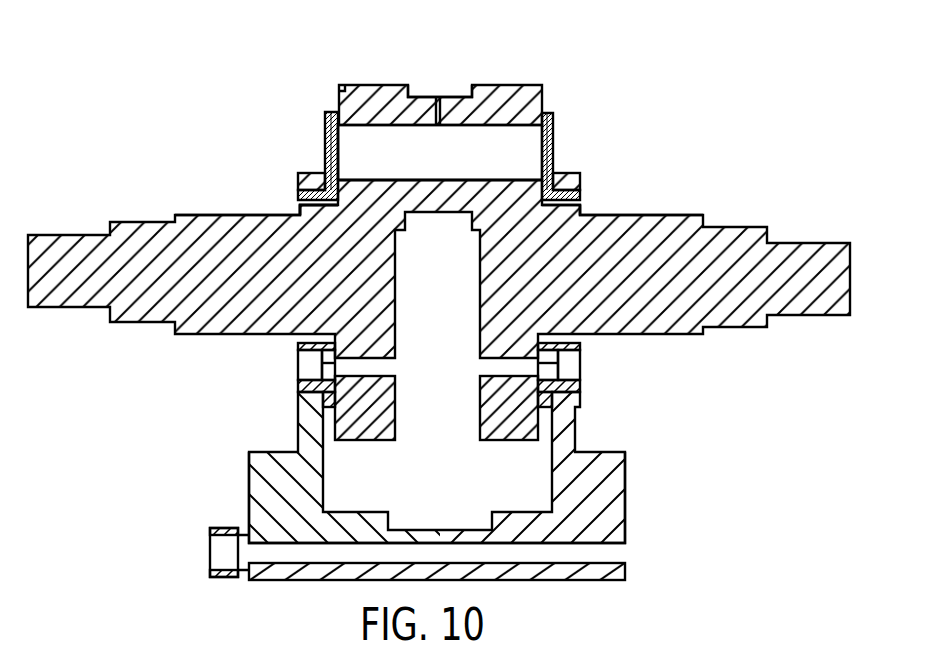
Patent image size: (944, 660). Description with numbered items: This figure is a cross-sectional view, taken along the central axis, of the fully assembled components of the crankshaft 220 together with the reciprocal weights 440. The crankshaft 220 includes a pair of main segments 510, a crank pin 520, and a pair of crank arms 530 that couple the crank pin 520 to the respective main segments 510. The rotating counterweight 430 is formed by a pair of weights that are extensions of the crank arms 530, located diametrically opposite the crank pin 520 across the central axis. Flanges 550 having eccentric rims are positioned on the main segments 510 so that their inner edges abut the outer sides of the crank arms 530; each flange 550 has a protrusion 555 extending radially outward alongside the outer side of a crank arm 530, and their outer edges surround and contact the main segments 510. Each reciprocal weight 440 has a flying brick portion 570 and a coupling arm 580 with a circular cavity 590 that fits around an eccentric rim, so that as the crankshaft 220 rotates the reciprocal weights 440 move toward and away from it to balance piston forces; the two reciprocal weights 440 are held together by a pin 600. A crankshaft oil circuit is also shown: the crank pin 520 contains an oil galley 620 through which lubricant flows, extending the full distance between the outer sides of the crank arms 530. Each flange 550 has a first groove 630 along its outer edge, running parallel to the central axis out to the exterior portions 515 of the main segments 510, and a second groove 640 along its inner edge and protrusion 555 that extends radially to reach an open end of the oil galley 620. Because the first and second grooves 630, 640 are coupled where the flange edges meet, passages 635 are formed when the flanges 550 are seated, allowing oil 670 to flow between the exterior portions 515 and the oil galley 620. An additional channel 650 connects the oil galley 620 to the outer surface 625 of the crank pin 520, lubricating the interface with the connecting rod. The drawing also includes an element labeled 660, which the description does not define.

The crankshaft 220 is at (736, 398).
The rotating counterweight 430 is at (505, 445).
The reciprocal weights 440 is at (635, 560).
The main segments 510 is at (142, 325).
The exterior portions 515 is at (268, 335).
The crank pin 520 is at (470, 88).
The crank arms 530 is at (352, 85).
The flanges 550 is at (324, 104).
The protrusion 555 is at (324, 131).
The flying brick portion 570 is at (262, 452).
The coupling arm 580 is at (308, 174).
The circular cavity 590 is at (294, 200).
The pin 600 is at (212, 511).
The oil galley 620 is at (531, 149).
The outer surface 625 is at (418, 94).
The first groove 630 is at (294, 200).
The passages 635 is at (346, 170).
The second groove 640 is at (347, 126).
The additional channel 650 is at (438, 96).
The bearing 660 is at (295, 371).
The oil 670 is at (586, 206).